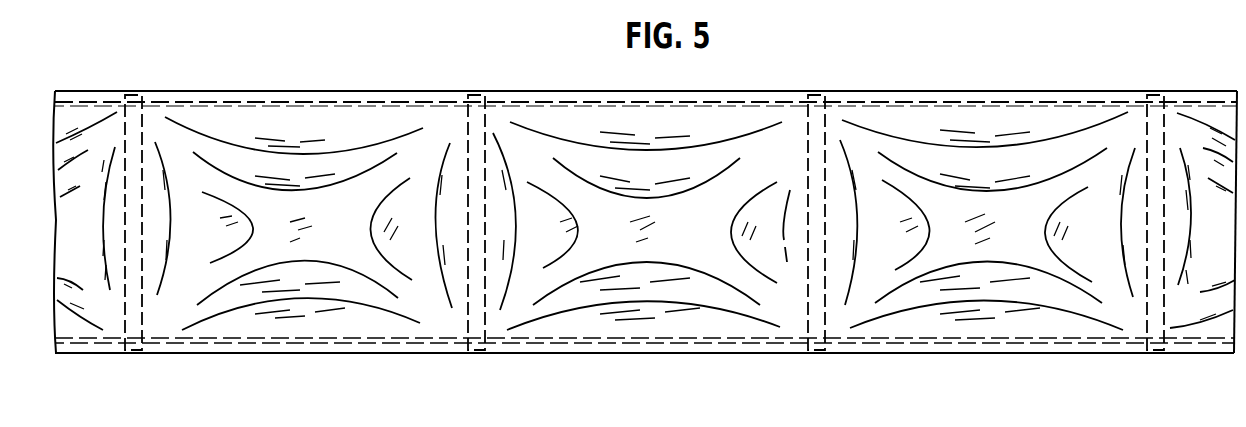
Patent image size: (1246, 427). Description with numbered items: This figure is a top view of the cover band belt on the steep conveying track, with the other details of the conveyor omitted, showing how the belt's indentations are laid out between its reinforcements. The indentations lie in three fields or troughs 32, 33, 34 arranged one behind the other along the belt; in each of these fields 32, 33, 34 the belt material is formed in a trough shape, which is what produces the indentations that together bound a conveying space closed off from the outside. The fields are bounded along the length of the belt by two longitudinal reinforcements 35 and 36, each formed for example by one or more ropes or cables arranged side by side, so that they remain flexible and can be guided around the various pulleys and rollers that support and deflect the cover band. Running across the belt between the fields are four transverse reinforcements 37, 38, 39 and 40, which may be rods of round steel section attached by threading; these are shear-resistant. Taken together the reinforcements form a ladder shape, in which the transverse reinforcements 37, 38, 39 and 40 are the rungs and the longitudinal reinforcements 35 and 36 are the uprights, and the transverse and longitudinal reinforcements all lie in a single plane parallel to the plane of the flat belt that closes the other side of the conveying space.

The field 32 is at (340, 325).
The field 33 is at (650, 322).
The field 34 is at (990, 318).
The longitudinal reinforcement 35 is at (298, 107).
The longitudinal reinforcement 36 is at (250, 340).
The transverse reinforcement 37 is at (137, 118).
The transverse reinforcement 38 is at (481, 108).
The transverse reinforcement 39 is at (818, 122).
The transverse reinforcement 40 is at (1160, 120).